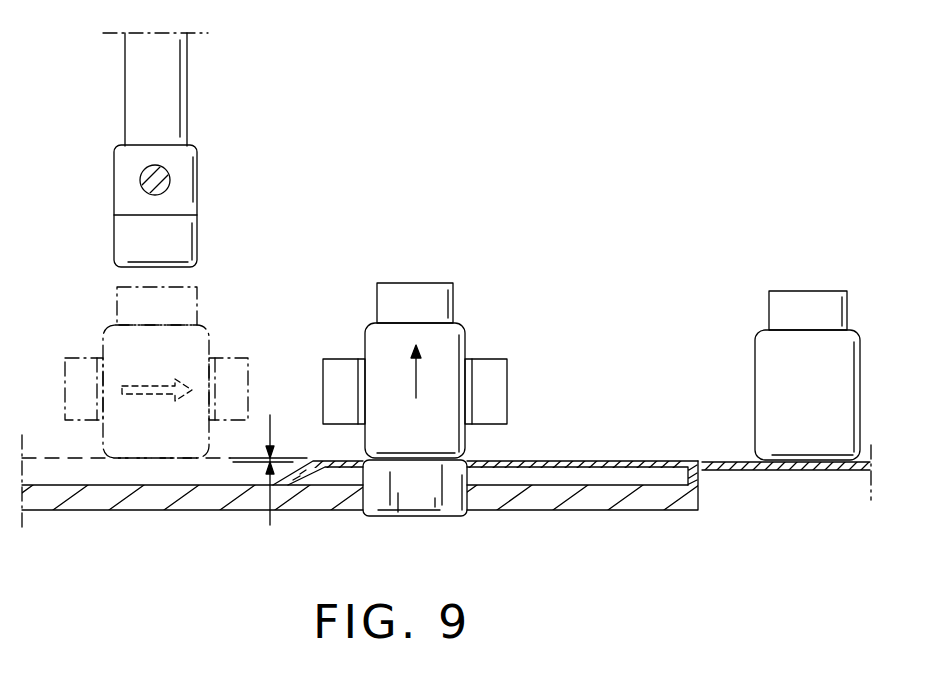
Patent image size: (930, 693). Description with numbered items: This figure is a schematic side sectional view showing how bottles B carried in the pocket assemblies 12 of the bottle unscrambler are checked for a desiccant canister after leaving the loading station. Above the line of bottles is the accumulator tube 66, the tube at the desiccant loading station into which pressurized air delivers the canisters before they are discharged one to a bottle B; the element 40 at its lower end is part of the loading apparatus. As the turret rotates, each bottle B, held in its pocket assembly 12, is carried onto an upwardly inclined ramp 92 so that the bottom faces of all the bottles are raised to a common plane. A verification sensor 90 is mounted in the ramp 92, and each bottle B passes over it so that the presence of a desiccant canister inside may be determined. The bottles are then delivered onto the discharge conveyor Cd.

The accumulator tube 66 is at (182, 80).
The suction nozzle head 40 is at (203, 194).
The pocket assembly 12 is at (60, 360).
The bottle B is at (200, 335).
The upwardly inclined ramp 92 is at (580, 460).
The verification sensor 90 is at (424, 507).
The discharge conveyor Cd is at (755, 470).